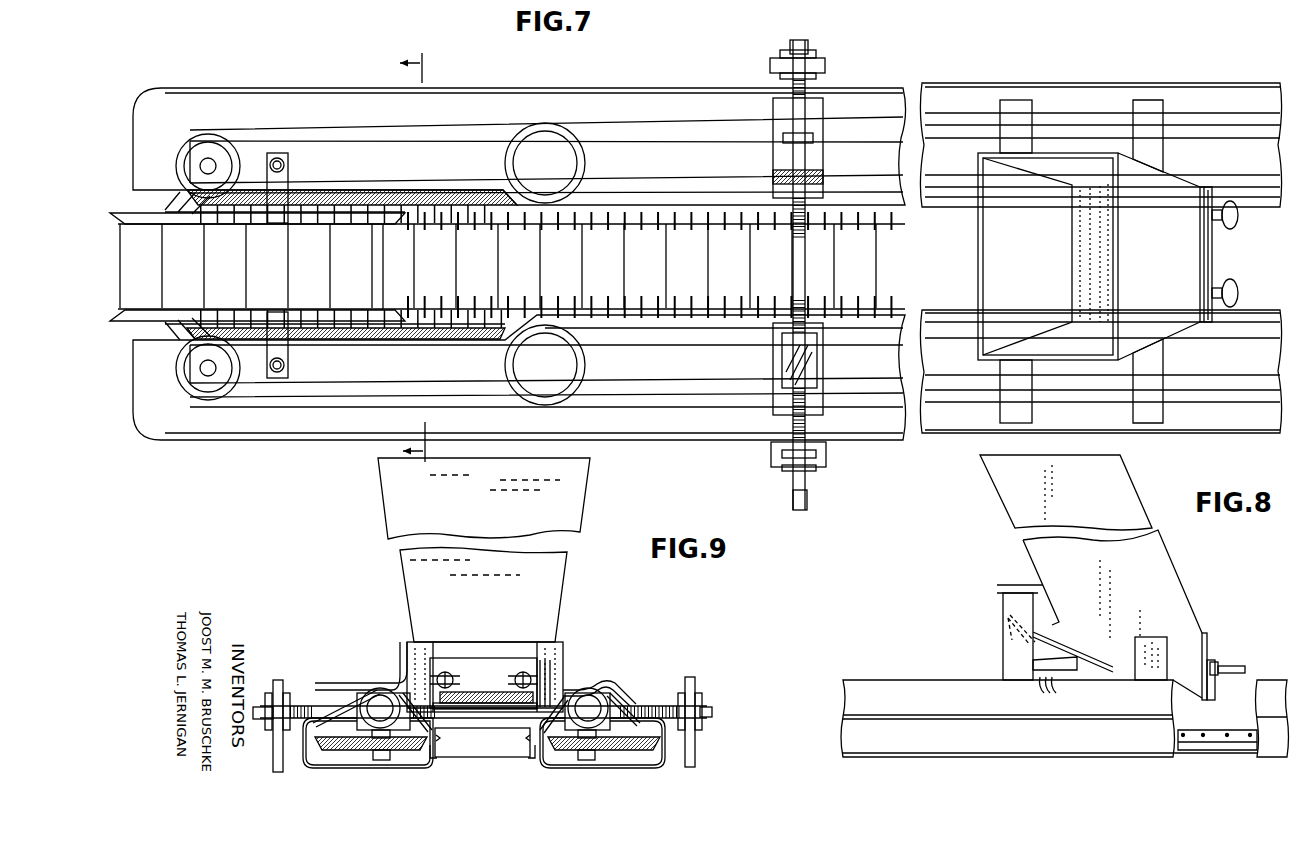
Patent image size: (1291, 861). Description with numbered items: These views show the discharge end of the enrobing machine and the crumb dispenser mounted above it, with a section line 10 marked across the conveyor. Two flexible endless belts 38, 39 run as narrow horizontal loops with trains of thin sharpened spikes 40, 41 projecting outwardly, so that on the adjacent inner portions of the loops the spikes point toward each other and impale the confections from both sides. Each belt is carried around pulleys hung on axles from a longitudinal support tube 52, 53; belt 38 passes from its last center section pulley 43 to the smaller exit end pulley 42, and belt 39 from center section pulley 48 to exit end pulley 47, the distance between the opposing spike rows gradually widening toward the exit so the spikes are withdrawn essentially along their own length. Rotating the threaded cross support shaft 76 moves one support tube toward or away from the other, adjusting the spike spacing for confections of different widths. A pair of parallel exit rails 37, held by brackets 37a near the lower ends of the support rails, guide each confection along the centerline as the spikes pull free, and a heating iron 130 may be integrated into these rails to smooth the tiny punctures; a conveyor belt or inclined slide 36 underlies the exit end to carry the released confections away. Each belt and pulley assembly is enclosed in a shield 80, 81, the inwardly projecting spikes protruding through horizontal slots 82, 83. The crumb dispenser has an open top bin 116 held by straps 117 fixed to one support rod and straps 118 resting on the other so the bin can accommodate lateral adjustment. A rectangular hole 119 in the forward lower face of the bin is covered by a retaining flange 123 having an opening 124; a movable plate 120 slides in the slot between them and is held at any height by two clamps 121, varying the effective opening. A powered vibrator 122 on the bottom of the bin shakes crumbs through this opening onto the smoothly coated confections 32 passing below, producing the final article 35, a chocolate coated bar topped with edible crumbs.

In FIG. 7, the section line 10 is at (428, 257).
In FIG. 9, the coated confection 32 is at (476, 754).
In FIG. 7, the final article 35 is at (330, 263).
In FIG. 7, the conveyor belt or inclined slide 36 is at (385, 258).
In FIG. 7, the exit rails 37 is at (172, 212).
In FIG. 7, the brackets 37a is at (288, 165).
In FIG. 7, the flexible endless belt 38 is at (378, 190).
In FIG. 9, the flexible endless belt 38 is at (625, 745).
In FIG. 7, the flexible endless belt 39 is at (345, 341).
In FIG. 8, the flexible endless belt 39 is at (1245, 723).
In FIG. 9, the flexible endless belt 39 is at (340, 746).
In FIG. 7, the spikes 40 is at (677, 226).
In FIG. 9, the spikes 40 is at (525, 739).
In FIG. 7, the spikes 41 is at (677, 304).
In FIG. 9, the spikes 41 is at (441, 739).
In FIG. 7, the exit end pulley 42 is at (197, 135).
In FIG. 7, the center section pulley 43 is at (548, 135).
In FIG. 7, the exit end pulley 47 is at (198, 396).
In FIG. 7, the center section pulley 48 is at (548, 402).
In FIG. 9, the support tube 52 is at (609, 722).
In FIG. 9, the support tube 53 is at (357, 723).
In FIG. 7, the cross support shaft 76 is at (793, 246).
In FIG. 9, the cross support shaft 76 is at (654, 704).
In FIG. 7, the shield 80 is at (314, 88).
In FIG. 9, the shield 80 is at (658, 766).
In FIG. 7, the shield 81 is at (313, 440).
In FIG. 8, the shield 81 is at (924, 686).
In FIG. 9, the shield 81 is at (314, 764).
In FIG. 9, the horizontal slot 82 is at (540, 752).
In FIG. 9, the horizontal slot 83 is at (434, 752).
In FIG. 7, the bin 116 is at (985, 245).
In FIG. 8, the bin 116 is at (1035, 562).
In FIG. 9, the bin 116 is at (555, 572).
In FIG. 7, the straps 117 is at (1013, 103).
In FIG. 9, the straps 117 is at (600, 686).
In FIG. 7, the straps 118 is at (1144, 407).
In FIG. 8, the straps 118 is at (1018, 677).
In FIG. 9, the straps 118 is at (355, 684).
In FIG. 9, the rectangular hole 119 is at (466, 711).
In FIG. 7, the movable plate 120 is at (1200, 245).
In FIG. 8, the movable plate 120 is at (1207, 651).
In FIG. 9, the movable plate 120 is at (523, 663).
In FIG. 7, the clamps 121 is at (1228, 230).
In FIG. 8, the clamps 121 is at (1222, 665).
In FIG. 9, the clamps 121 is at (523, 670).
In FIG. 8, the powered vibrator 122 is at (1064, 664).
In FIG. 7, the retaining flange 123 is at (1203, 212).
In FIG. 8, the retaining flange 123 is at (1207, 700).
In FIG. 9, the retaining flange 123 is at (560, 678).
In FIG. 9, the opening 124 is at (496, 692).
In FIG. 7, the heating iron 130 is at (123, 213).